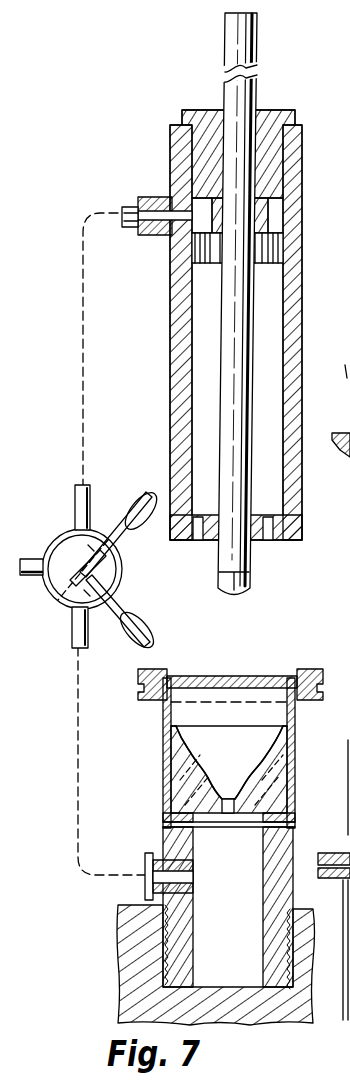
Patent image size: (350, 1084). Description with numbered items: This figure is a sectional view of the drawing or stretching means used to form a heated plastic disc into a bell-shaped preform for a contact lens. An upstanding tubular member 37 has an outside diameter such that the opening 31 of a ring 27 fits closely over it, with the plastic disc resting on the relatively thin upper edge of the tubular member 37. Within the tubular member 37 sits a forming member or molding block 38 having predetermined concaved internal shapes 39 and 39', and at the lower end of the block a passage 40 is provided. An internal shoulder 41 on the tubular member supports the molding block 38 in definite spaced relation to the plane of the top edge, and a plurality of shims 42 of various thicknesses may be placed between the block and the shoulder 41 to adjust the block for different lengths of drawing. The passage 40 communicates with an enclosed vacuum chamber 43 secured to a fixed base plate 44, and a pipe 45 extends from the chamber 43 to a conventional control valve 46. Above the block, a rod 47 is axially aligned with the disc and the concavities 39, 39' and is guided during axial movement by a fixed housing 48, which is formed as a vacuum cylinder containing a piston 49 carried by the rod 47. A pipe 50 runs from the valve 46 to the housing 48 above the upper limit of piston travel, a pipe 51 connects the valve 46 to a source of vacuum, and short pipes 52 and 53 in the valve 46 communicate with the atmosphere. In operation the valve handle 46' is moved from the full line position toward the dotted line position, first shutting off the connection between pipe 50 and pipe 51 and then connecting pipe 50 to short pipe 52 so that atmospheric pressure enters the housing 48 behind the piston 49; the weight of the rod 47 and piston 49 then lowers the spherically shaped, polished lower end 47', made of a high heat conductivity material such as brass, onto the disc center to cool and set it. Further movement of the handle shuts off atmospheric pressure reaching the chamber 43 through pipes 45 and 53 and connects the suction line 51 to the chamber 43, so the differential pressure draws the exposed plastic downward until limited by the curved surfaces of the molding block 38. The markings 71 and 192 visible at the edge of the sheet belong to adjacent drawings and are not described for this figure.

The ring 27 is at (137, 693).
The opening 31 is at (232, 677).
The tubular member 37 is at (295, 760).
The molding block 38 is at (262, 730).
The concave shape 39 is at (229, 769).
The concave shape 39' is at (229, 762).
The passage 40 is at (226, 815).
The internal shoulder 41 is at (294, 832).
The shims 42 is at (292, 811).
The vacuum chamber 43 is at (250, 890).
The base plate 44 is at (125, 968).
The pipe 45 is at (78, 640).
The control valve 46 is at (73, 585).
The valve handle 46' is at (122, 521).
The rod 47 is at (284, 304).
The lower end of rod 47' is at (256, 587).
The housing 48 is at (293, 342).
The piston 49 is at (275, 245).
The pipe 50 is at (88, 492).
The pipe 51 is at (25, 559).
The short pipe 52 is at (112, 540).
The short pipe 53 is at (115, 600).
The adjacent member 71 is at (339, 411).
The adjacent member 192 is at (334, 880).